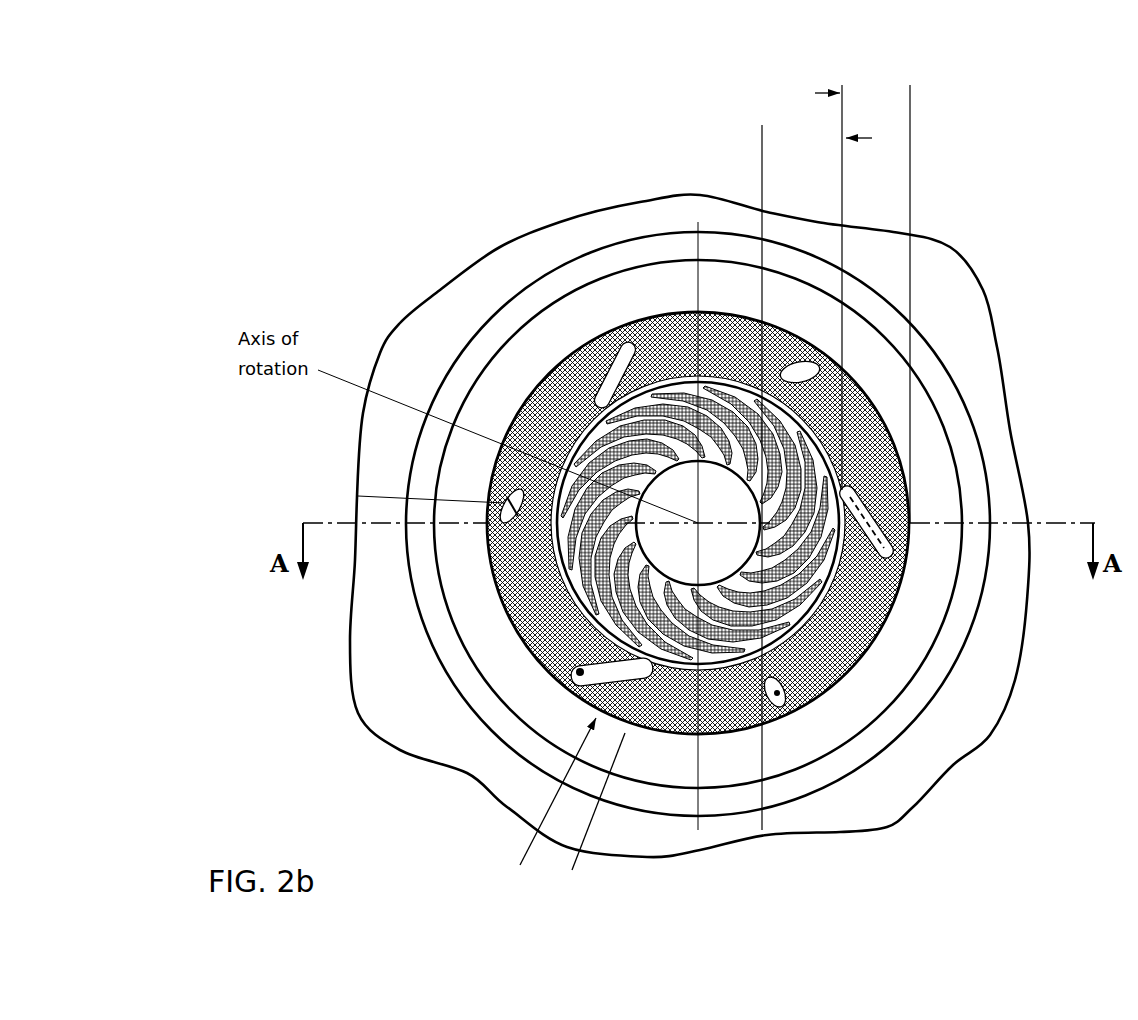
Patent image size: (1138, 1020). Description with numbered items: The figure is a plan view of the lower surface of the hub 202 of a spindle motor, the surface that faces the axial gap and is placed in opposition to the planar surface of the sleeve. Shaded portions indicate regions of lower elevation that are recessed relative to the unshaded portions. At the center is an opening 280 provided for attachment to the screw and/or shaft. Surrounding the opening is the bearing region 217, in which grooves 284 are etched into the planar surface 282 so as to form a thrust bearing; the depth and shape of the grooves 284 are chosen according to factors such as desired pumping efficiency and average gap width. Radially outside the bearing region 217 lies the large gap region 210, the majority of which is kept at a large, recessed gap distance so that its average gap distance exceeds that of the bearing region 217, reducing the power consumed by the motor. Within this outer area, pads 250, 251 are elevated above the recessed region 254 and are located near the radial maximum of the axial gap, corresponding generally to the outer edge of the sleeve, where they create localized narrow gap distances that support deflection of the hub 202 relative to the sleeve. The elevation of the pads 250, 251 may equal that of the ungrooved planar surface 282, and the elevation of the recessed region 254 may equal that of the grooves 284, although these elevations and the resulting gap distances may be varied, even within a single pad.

The hub 202 is at (566, 310).
The large gap region 210 is at (918, 93).
The bearing region 217 is at (748, 137).
The pad 250 is at (787, 717).
The pad 251 is at (580, 672).
The recessed region 254 is at (590, 627).
The opening 280 is at (673, 467).
The planar surface 282 is at (588, 563).
The grooves 284 is at (598, 585).